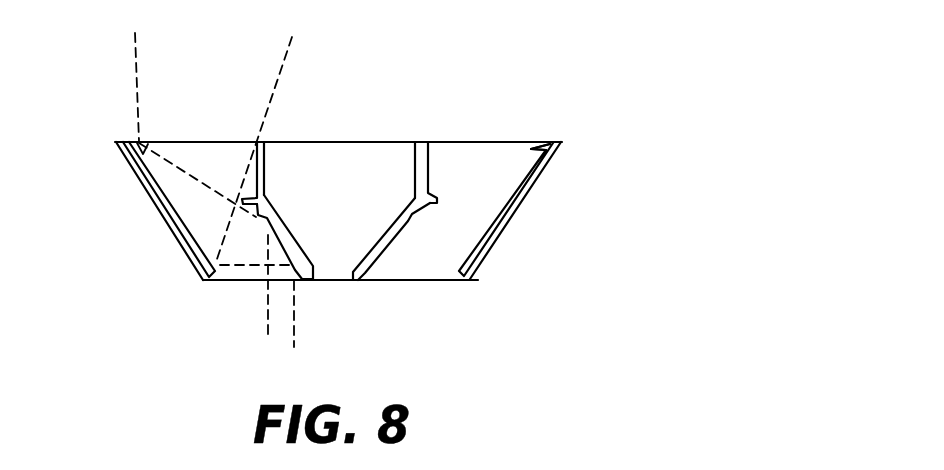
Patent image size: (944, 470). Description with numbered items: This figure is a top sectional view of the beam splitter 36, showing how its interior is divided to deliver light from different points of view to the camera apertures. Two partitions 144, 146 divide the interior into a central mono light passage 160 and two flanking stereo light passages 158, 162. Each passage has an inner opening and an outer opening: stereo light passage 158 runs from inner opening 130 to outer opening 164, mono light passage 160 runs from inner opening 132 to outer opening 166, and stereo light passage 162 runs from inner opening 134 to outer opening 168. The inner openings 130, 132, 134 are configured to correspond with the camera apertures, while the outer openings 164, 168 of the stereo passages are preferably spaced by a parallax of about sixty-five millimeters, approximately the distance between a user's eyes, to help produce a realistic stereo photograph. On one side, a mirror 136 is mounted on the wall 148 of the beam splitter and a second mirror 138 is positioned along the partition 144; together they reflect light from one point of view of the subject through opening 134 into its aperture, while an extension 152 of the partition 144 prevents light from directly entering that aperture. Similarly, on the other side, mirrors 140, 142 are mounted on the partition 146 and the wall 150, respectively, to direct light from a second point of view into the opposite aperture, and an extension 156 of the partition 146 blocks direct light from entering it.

The beam splitter 36 is at (628, 123).
The inner opening 130 is at (447, 281).
The inner opening 132 is at (333, 282).
The inner opening 134 is at (250, 282).
The mirror 136 is at (152, 186).
The second mirror 138 is at (304, 253).
The mirror 140 is at (388, 260).
The mirror 142 is at (533, 142).
The partition 144 is at (288, 240).
The partition 146 is at (378, 233).
The wall 148 is at (186, 241).
The wall 150 is at (505, 223).
The extension 152 is at (264, 157).
The extension 156 is at (431, 194).
The stereo light passage 158 is at (477, 196).
The mono light passage 160 is at (342, 232).
The stereo light passage 162 is at (198, 212).
The outer opening 164 is at (478, 142).
The outer opening 166 is at (354, 142).
The outer opening 168 is at (200, 141).